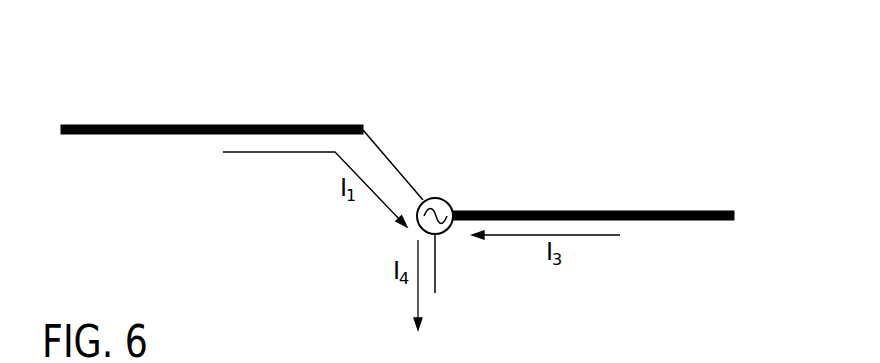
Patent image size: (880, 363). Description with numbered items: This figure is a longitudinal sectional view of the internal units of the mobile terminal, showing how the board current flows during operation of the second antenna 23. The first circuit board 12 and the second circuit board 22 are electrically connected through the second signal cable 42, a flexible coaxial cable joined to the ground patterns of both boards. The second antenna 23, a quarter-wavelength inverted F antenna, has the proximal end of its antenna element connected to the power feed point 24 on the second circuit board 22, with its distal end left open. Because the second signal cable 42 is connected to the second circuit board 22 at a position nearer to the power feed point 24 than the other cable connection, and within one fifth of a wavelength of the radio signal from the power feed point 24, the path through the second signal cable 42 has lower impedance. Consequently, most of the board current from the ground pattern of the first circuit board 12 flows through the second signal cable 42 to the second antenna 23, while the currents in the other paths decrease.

The first circuit board 12 is at (173, 125).
The second signal cable 42 is at (389, 160).
The power feed point 24 is at (447, 200).
The second circuit board 22 is at (655, 210).
The second antenna 23 is at (437, 270).